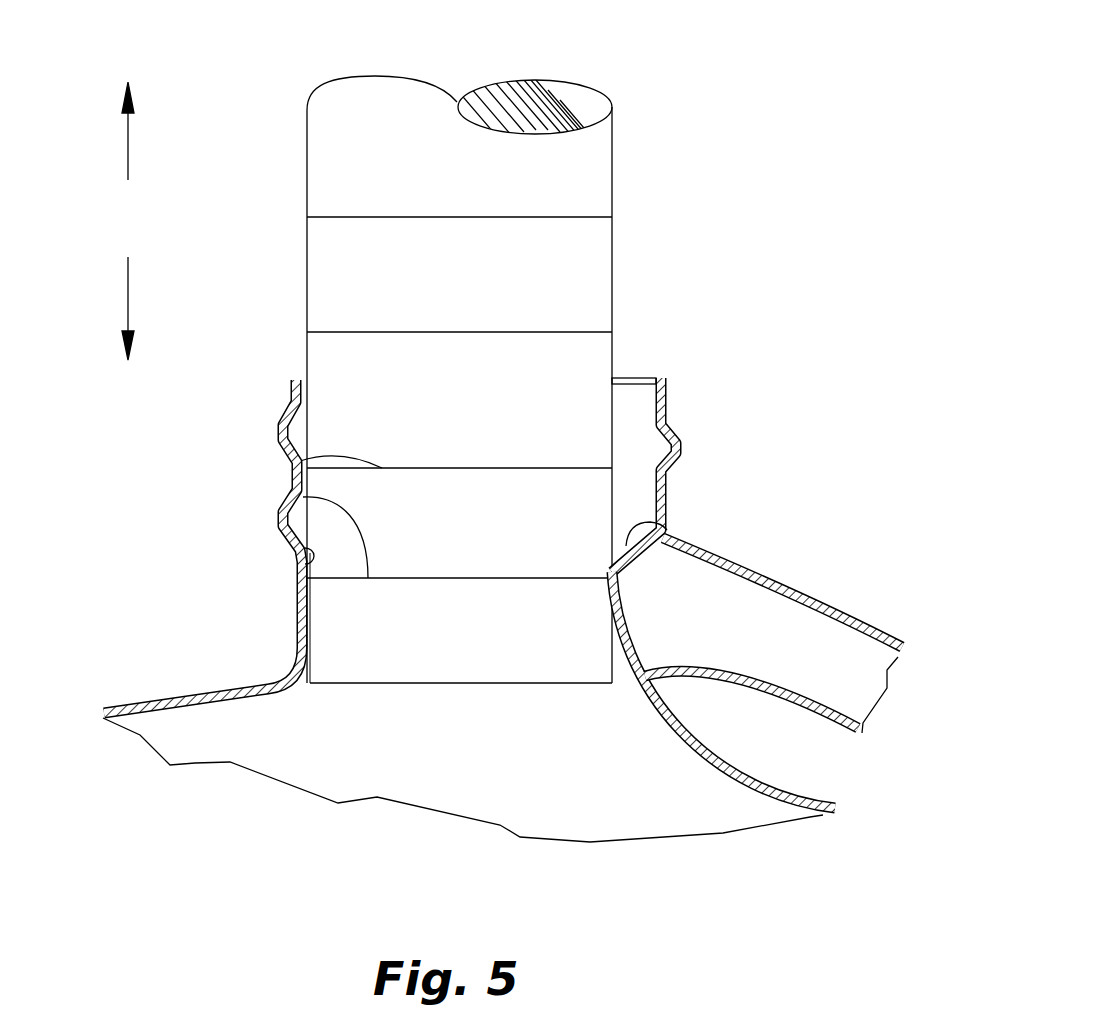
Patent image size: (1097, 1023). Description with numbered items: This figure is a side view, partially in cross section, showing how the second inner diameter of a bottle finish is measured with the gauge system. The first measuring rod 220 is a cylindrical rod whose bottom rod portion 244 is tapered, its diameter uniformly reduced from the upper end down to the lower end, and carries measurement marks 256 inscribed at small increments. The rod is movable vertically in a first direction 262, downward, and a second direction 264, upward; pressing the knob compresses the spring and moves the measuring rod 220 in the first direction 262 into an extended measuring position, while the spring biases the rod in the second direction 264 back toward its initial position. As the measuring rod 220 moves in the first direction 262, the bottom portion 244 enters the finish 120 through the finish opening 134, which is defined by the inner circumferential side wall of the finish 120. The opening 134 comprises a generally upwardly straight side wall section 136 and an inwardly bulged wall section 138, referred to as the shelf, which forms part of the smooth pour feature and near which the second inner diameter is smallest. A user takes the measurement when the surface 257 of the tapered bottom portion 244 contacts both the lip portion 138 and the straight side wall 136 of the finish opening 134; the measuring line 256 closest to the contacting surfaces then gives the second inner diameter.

The finish 120 is at (686, 400).
The finish opening 134 is at (757, 557).
The straight side wall section 136 is at (297, 543).
The inwardly bulged wall section 138 is at (627, 532).
The first measuring rod 220 is at (601, 68).
The bottom rod portion 244 is at (612, 163).
The measurement marks 256 is at (300, 493).
The surface 257 is at (302, 337).
The first direction 262 is at (128, 300).
The second direction 264 is at (128, 143).